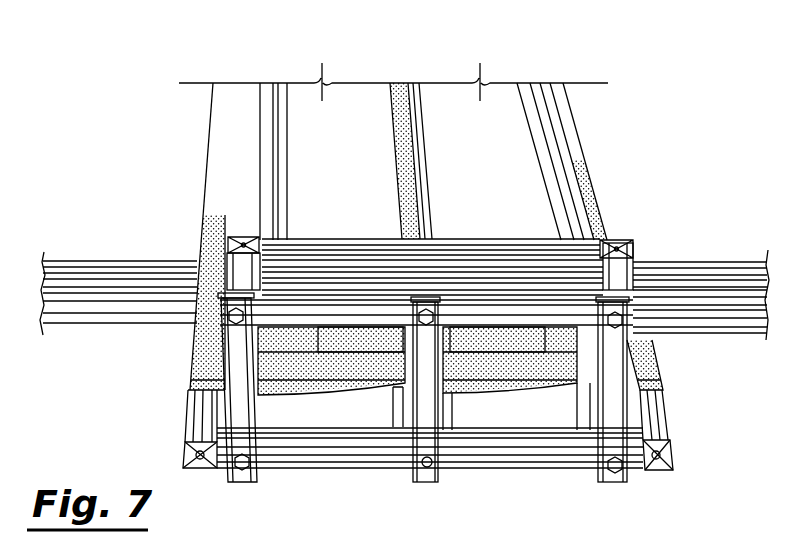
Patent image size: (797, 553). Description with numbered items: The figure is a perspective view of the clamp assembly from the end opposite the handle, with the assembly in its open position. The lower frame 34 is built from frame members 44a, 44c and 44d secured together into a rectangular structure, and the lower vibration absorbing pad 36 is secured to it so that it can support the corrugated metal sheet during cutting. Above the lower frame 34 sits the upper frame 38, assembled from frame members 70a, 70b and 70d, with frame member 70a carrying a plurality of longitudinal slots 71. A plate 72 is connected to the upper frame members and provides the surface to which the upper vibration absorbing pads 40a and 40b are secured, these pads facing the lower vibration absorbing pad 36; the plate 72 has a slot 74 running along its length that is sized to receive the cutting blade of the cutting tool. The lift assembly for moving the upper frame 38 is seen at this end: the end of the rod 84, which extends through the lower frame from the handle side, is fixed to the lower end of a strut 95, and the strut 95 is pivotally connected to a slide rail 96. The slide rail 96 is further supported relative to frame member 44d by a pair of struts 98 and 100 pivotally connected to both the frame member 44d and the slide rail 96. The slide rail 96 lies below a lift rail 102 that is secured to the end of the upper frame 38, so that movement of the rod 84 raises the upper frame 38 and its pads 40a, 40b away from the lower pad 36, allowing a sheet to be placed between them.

The plate 72 is at (345, 102).
The longitudinal slots 71 is at (277, 132).
The frame member 70a is at (262, 182).
The slot 74 is at (414, 148).
The upper frame 38 is at (575, 112).
The frame member 70b is at (586, 143).
The frame member 70d is at (520, 237).
The lift rail 102 is at (633, 267).
The slide rail 96 is at (692, 330).
The lower vibration absorbing pad 36 is at (658, 363).
The strut 98 is at (230, 330).
The rod 84 is at (437, 483).
The strut 100 is at (615, 482).
The upper vibration absorbing pad 40b is at (357, 340).
The upper vibration absorbing pad 40a is at (487, 340).
The strut 95 is at (410, 423).
The frame member 44d is at (530, 467).
The frame member 44a is at (185, 417).
The frame member 44c is at (667, 415).
The lower frame 34 is at (670, 432).